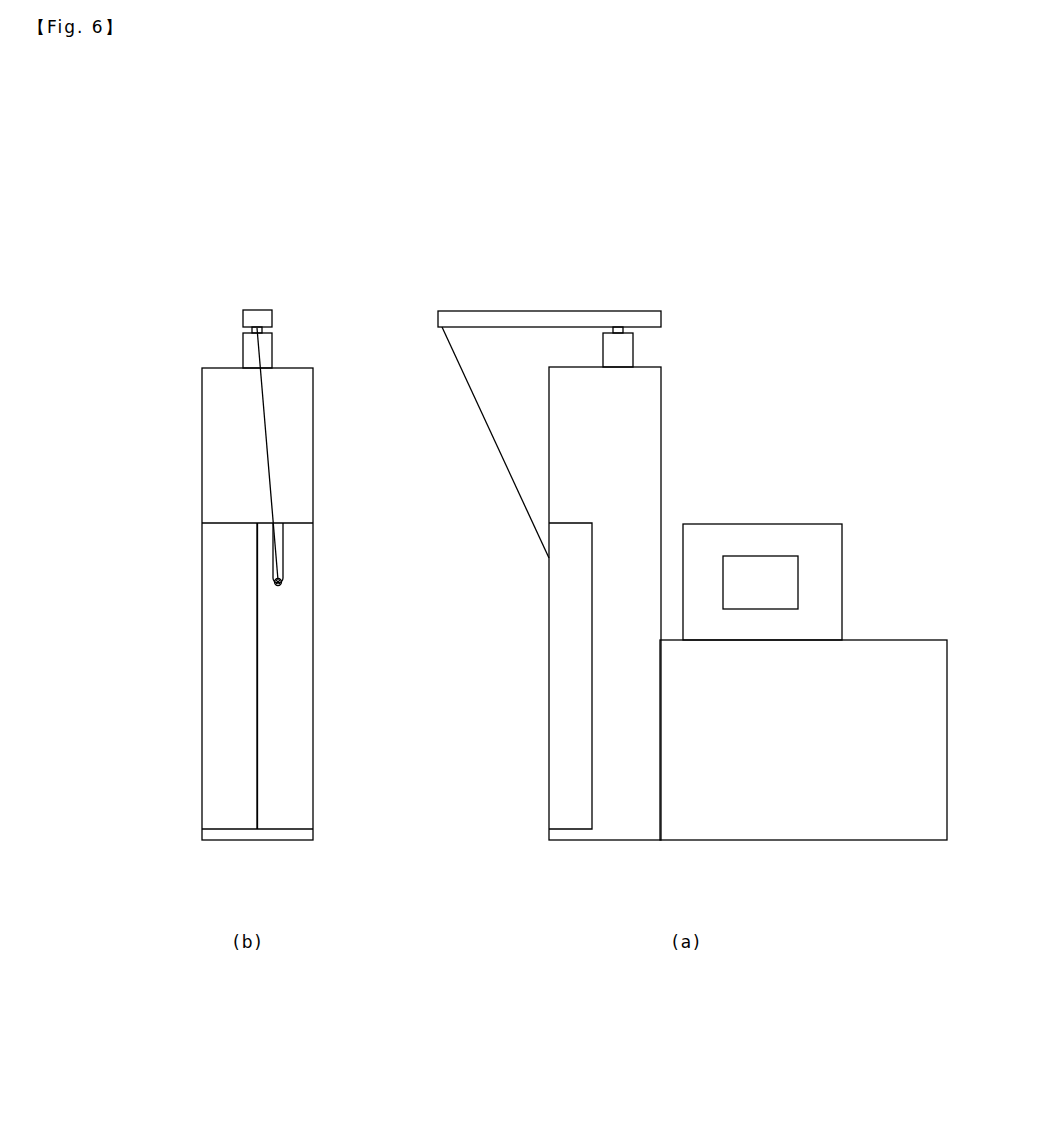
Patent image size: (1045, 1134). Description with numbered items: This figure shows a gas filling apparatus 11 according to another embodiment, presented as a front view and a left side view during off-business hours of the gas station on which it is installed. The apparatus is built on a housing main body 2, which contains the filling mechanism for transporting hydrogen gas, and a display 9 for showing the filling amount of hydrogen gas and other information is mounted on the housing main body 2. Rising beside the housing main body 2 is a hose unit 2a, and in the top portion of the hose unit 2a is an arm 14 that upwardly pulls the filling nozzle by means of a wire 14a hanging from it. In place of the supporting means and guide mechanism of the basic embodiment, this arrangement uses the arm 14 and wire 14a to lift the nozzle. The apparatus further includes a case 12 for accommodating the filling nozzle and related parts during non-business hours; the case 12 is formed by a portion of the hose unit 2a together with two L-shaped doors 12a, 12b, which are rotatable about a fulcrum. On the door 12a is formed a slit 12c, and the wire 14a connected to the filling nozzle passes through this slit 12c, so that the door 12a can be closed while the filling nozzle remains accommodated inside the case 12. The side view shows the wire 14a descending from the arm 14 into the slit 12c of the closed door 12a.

The gas filling apparatus 11 is at (207, 282).
The housing main body 2 is at (895, 640).
The hose unit 2a is at (298, 368).
The display 9 is at (792, 524).
The case 12 is at (549, 702).
The door 12a is at (300, 700).
The door 12b is at (218, 693).
The slit 12c is at (283, 543).
The arm 14 is at (258, 310).
The wire 14a is at (268, 440).